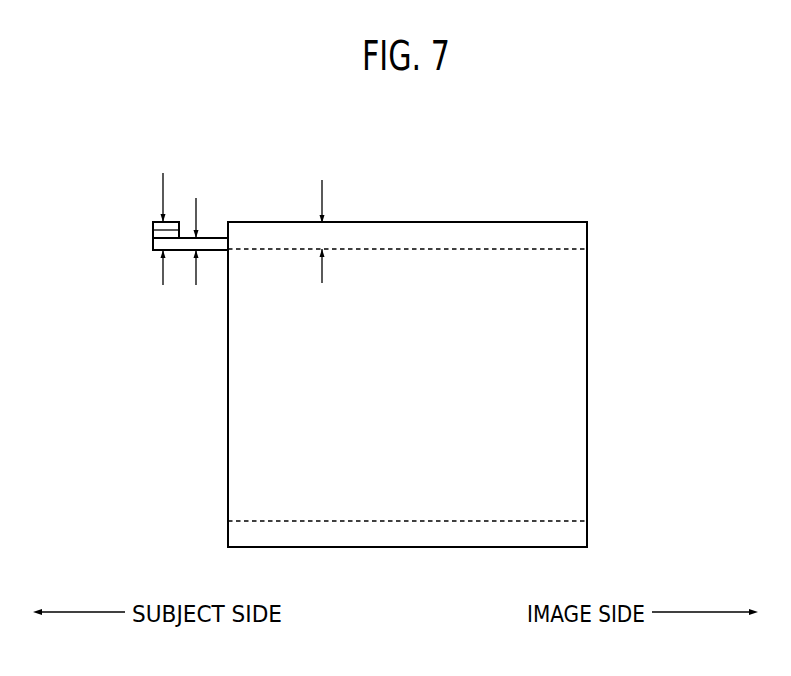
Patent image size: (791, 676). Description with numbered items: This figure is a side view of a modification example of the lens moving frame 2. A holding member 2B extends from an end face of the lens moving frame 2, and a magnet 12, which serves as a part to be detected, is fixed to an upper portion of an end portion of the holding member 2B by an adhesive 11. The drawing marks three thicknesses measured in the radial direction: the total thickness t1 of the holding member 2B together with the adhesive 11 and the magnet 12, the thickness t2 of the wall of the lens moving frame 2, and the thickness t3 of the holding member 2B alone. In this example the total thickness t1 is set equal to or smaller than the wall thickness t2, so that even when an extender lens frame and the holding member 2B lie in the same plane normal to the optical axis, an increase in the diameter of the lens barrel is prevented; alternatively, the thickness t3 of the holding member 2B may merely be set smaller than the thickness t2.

The lens moving frame 2 is at (565, 335).
The holding member 2B is at (208, 243).
The adhesive 11 is at (155, 236).
The magnet 12 is at (155, 227).
The total thickness t1 is at (150, 229).
The thickness of the wall of the lens moving frame t2 is at (310, 231).
The thickness of the holding member t3 is at (184, 237).